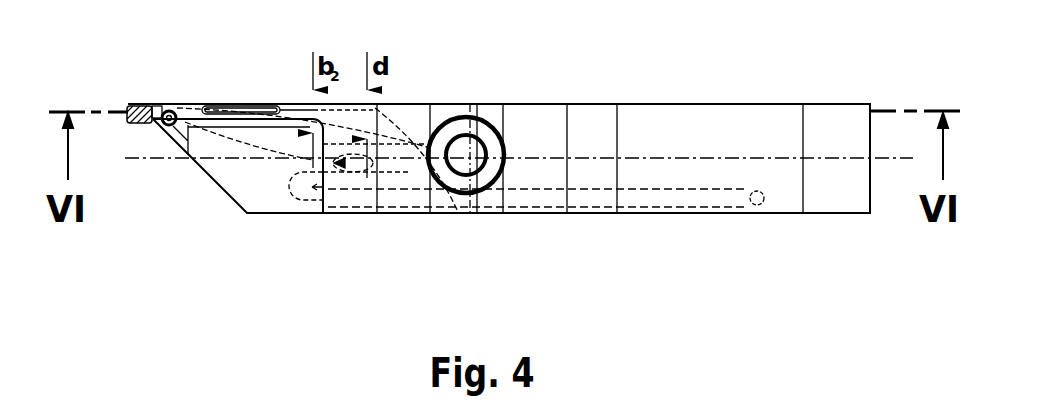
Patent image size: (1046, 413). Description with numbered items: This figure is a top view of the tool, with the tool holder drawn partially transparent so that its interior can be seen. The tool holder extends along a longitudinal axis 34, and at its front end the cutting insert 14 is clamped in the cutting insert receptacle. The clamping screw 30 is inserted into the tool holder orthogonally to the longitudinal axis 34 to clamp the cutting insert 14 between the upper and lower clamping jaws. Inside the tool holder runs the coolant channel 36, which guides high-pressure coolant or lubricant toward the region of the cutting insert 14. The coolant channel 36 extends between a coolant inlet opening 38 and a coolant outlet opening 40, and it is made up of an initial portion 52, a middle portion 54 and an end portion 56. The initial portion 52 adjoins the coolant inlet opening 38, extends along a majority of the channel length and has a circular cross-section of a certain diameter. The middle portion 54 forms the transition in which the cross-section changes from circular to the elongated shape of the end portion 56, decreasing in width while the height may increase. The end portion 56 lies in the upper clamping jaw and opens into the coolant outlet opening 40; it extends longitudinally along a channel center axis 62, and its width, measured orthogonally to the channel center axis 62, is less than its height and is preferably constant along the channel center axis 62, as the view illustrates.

The cutting insert 14 is at (150, 103).
The clamping screw 30 is at (483, 117).
The longitudinal axis 34 is at (147, 160).
The coolant channel 36 is at (665, 200).
The coolant inlet opening 38 is at (488, 166).
The coolant outlet opening 40 is at (243, 112).
The initial portion 52 is at (394, 130).
The middle portion 54 is at (344, 108).
The end portion 56 is at (287, 108).
The channel center axis 62 is at (93, 104).